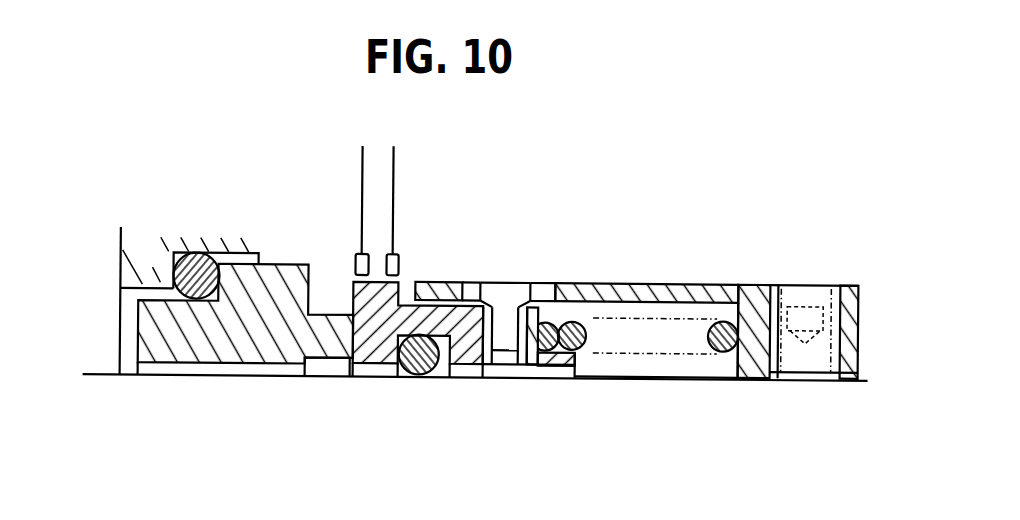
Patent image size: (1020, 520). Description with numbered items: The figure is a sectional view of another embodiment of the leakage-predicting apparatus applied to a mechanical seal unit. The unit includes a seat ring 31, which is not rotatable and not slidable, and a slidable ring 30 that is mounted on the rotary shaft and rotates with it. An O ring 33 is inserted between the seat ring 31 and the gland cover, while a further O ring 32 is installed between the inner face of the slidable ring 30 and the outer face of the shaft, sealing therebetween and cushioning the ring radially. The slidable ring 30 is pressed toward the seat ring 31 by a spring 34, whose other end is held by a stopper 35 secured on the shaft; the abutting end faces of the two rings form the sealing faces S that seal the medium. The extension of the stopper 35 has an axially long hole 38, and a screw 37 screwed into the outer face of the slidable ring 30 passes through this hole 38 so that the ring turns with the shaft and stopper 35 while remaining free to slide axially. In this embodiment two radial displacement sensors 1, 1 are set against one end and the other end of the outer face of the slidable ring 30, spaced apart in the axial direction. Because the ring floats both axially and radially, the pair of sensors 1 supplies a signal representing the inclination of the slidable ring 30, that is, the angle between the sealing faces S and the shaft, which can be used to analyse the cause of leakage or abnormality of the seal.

The radial displacement sensor 1 is at (357, 263).
The slidable ring 30 is at (377, 349).
The seat ring 31 is at (240, 335).
The O ring 32 is at (418, 376).
The O ring 33 is at (194, 254).
The spring 34 is at (722, 350).
The stopper 35 is at (757, 303).
The screw 37 is at (520, 283).
The hole 38 is at (472, 283).
The sealing faces S is at (352, 336).